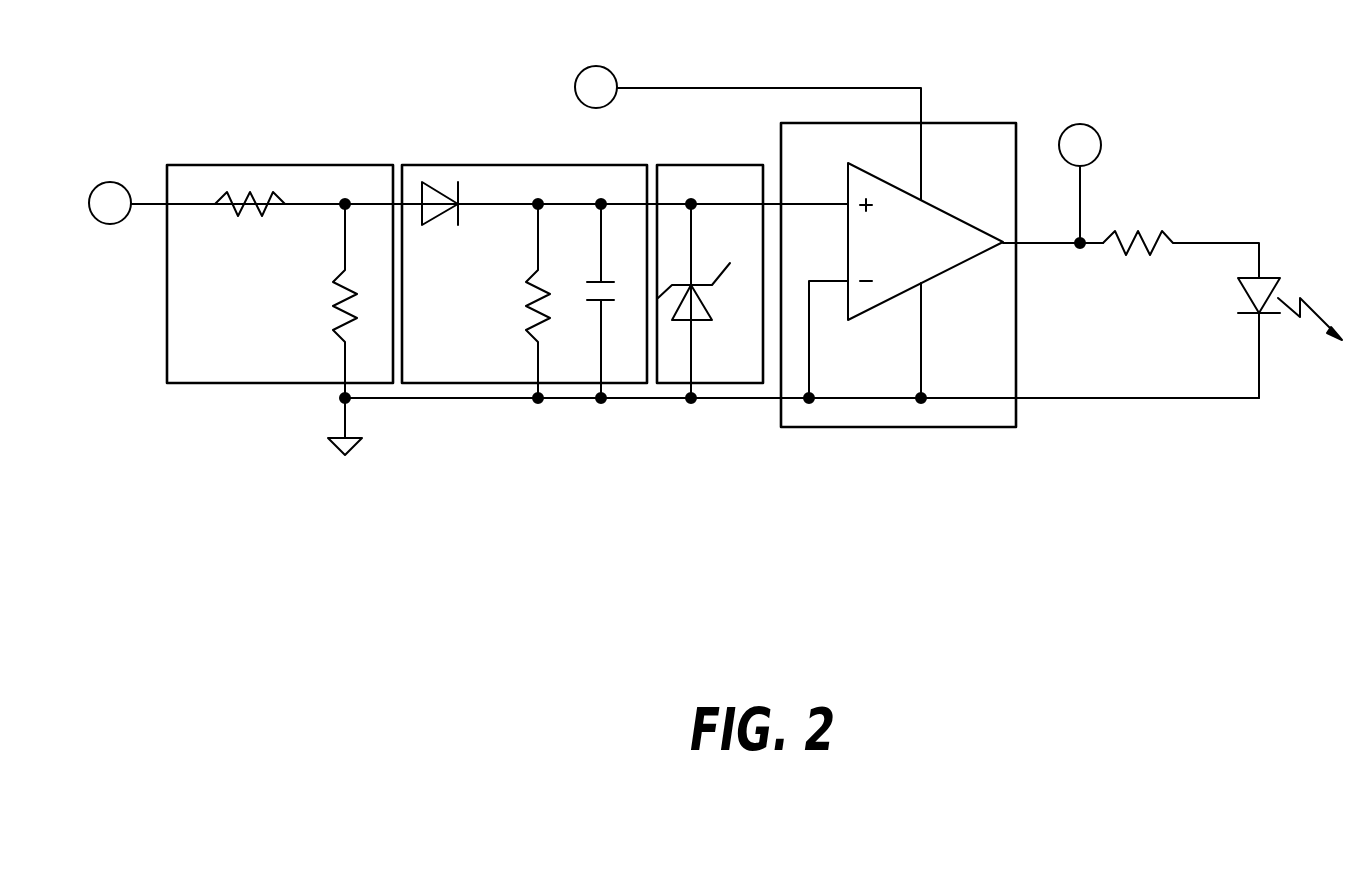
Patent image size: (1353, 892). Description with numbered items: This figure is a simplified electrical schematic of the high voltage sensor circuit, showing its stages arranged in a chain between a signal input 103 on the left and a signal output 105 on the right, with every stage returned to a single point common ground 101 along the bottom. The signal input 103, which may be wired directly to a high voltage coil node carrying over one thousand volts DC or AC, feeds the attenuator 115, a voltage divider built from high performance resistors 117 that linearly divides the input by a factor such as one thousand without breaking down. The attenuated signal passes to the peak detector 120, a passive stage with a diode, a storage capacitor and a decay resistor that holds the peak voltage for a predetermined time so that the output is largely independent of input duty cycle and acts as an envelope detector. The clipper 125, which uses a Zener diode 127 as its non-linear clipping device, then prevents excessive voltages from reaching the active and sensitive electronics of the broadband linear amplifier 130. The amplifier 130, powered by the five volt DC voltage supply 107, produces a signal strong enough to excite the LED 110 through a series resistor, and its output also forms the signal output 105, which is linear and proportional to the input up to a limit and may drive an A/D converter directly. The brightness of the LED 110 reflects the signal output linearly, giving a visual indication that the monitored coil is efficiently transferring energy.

The single point common ground 101 is at (362, 439).
The signal input 103 is at (108, 225).
The signal output 105 is at (1102, 142).
The 5VDC voltage supply 107 is at (612, 70).
The LED 110 is at (1277, 280).
The attenuator 115 is at (277, 165).
The resistors 117 is at (338, 282).
The peak detector 120 is at (473, 165).
The clipper 125 is at (692, 165).
The Zener diode 127 is at (710, 317).
The linear amplifier 130 is at (1016, 357).